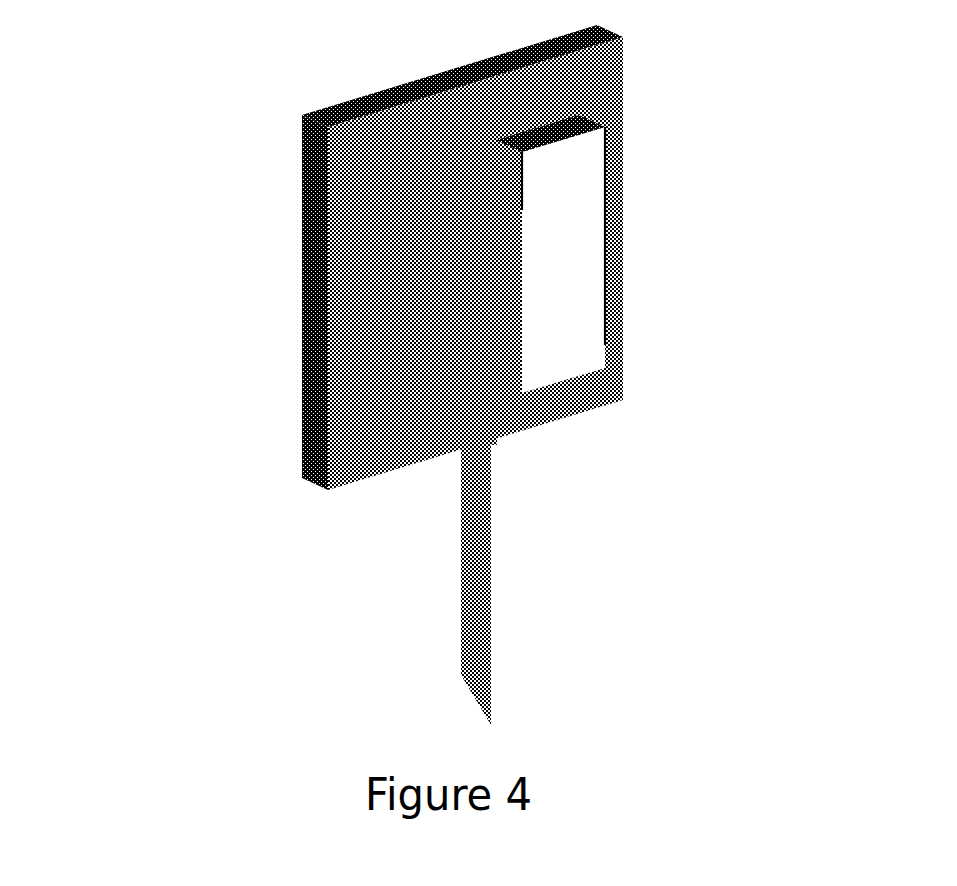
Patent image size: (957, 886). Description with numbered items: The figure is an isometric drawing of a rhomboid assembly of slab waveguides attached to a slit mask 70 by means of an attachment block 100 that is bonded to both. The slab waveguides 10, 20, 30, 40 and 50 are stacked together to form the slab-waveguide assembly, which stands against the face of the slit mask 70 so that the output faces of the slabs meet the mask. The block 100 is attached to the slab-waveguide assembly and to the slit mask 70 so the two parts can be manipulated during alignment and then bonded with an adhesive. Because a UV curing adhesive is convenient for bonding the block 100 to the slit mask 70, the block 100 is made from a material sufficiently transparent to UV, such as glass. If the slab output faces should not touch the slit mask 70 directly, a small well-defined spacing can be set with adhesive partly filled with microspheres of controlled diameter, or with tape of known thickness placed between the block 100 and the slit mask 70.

The slit mask 70 is at (302, 117).
The block 100 is at (592, 244).
The slab waveguide 10 is at (490, 187).
The slab waveguide 20 is at (490, 244).
The slab waveguide 30 is at (490, 291).
The slab waveguide 40 is at (475, 327).
The slab waveguide 50 is at (475, 592).